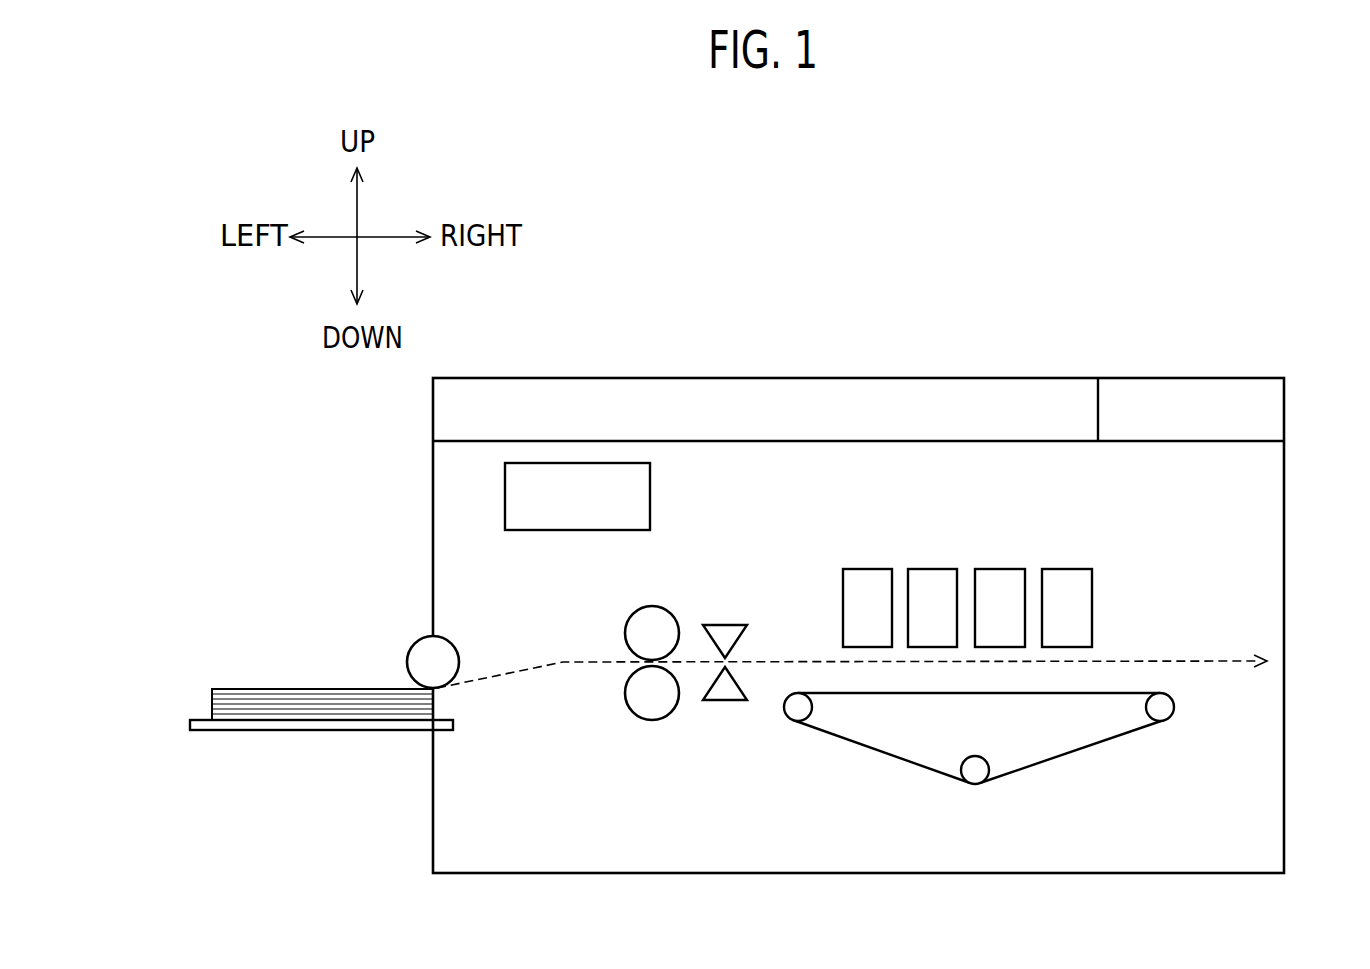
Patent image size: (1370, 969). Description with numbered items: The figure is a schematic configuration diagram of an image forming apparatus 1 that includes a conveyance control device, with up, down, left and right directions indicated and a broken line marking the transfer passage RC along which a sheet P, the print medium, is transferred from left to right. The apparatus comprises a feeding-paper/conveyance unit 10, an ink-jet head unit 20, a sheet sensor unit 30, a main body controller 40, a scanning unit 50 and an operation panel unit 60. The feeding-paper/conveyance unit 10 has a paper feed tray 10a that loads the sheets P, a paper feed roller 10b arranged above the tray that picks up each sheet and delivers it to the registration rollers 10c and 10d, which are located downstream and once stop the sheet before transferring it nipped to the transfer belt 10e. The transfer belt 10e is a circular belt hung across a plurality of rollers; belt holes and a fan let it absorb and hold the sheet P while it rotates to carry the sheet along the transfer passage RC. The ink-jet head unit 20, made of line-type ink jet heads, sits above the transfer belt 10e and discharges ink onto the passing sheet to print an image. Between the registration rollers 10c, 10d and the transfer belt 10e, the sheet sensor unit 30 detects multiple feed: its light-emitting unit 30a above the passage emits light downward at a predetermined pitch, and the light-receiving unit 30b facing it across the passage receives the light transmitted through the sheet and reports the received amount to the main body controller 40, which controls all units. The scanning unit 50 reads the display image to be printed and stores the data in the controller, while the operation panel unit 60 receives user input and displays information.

The image forming apparatus 1 is at (925, 337).
The feeding-paper/conveyance unit 10 is at (682, 704).
The paper feed tray 10a is at (310, 731).
The paper feed roller 10b is at (440, 638).
The registration roller 10c is at (630, 635).
The registration roller 10d is at (643, 703).
The transfer belt 10e is at (887, 756).
The ink-jet head unit 20 is at (1097, 556).
The sheet sensor unit 30 is at (747, 670).
The light-emitting unit 30a is at (725, 630).
The light-receiving unit 30b is at (725, 705).
The main body controller 40 is at (638, 487).
The scanning unit 50 is at (750, 382).
The operation panel unit 60 is at (1188, 400).
The sheet P is at (322, 688).
The transfer passage RC is at (1192, 658).